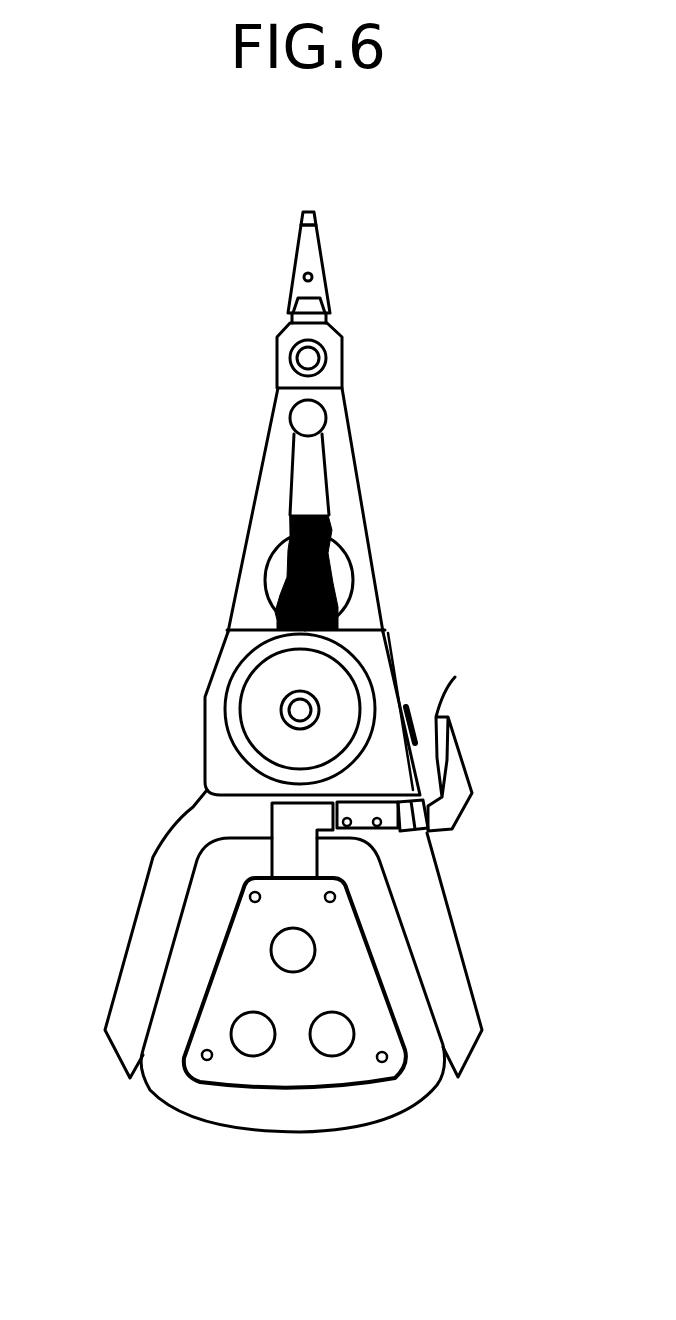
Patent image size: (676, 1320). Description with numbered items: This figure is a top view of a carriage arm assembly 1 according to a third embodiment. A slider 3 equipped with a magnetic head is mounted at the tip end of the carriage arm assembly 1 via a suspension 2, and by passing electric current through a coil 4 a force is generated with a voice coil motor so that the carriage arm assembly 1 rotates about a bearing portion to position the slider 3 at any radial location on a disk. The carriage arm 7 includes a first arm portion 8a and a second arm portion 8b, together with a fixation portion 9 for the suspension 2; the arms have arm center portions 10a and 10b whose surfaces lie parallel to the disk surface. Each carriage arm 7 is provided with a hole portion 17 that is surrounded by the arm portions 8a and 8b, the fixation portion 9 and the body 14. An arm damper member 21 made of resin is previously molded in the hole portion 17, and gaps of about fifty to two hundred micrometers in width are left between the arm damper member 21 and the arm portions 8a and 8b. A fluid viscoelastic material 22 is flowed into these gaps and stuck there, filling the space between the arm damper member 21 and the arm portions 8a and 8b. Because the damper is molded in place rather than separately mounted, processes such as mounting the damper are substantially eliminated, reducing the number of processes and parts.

The carriage arm assembly 1 is at (178, 820).
The suspension 2 is at (290, 272).
The slider 3 is at (313, 222).
The coil 4 is at (435, 1097).
The carriage arm 7 is at (222, 645).
The first arm portion 8a is at (262, 608).
The second arm portion 8b is at (362, 618).
The fixation portion 9 is at (340, 357).
The arm center portion 10a is at (277, 478).
The arm center portion 10b is at (342, 498).
The body 14 is at (205, 738).
The hole portion 17 is at (312, 472).
The arm damper member 21 is at (287, 568).
The fluid viscoelastic material 22 is at (333, 520).